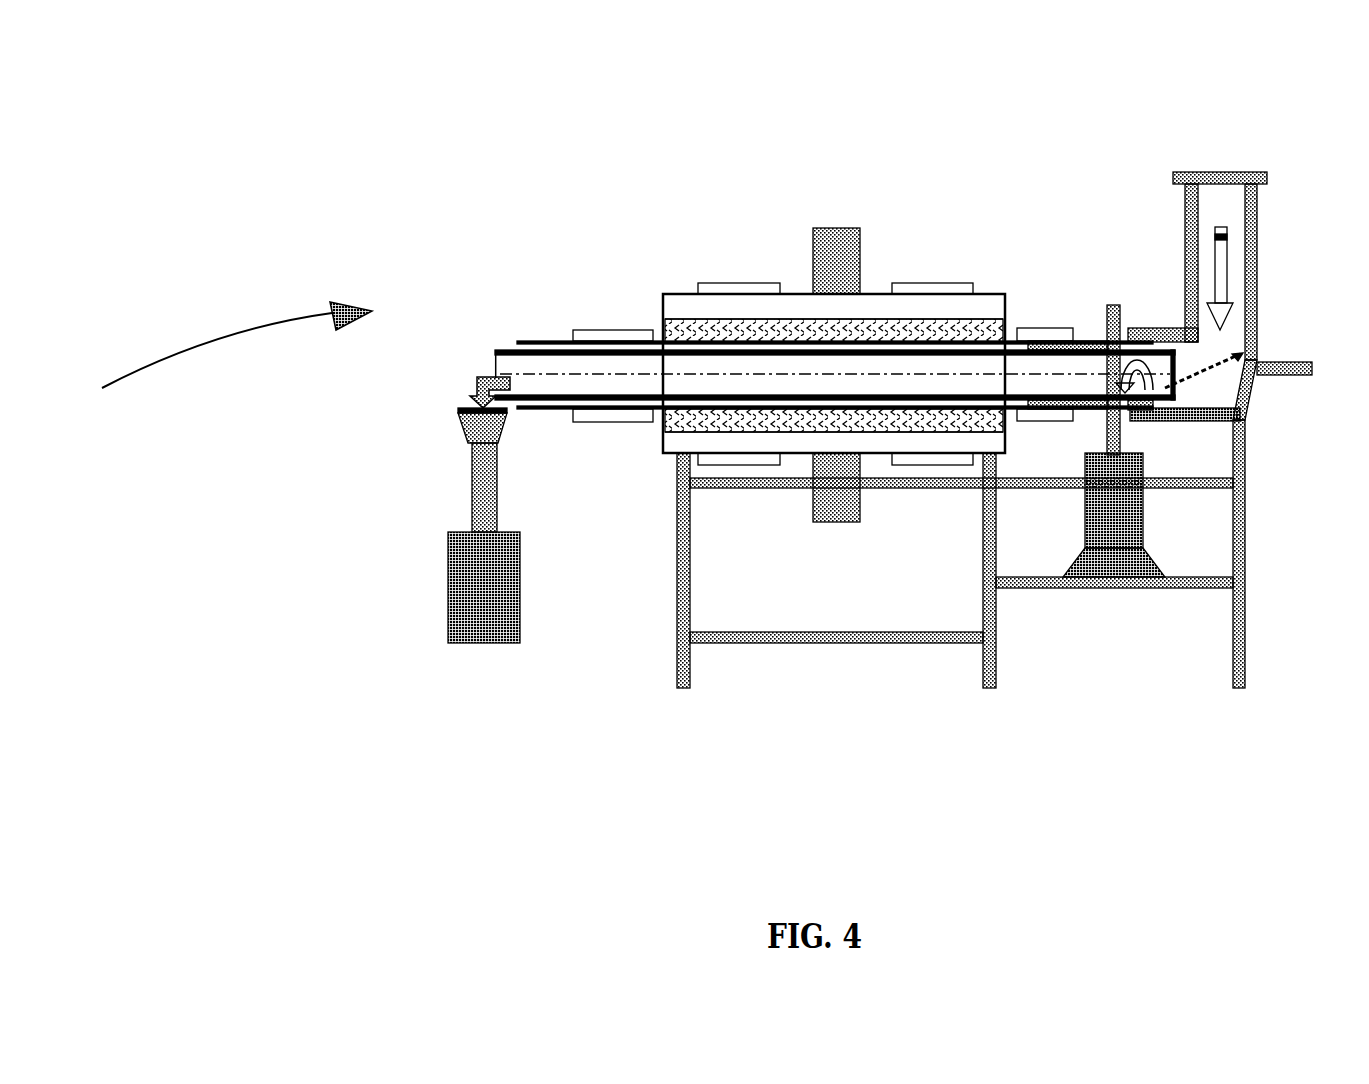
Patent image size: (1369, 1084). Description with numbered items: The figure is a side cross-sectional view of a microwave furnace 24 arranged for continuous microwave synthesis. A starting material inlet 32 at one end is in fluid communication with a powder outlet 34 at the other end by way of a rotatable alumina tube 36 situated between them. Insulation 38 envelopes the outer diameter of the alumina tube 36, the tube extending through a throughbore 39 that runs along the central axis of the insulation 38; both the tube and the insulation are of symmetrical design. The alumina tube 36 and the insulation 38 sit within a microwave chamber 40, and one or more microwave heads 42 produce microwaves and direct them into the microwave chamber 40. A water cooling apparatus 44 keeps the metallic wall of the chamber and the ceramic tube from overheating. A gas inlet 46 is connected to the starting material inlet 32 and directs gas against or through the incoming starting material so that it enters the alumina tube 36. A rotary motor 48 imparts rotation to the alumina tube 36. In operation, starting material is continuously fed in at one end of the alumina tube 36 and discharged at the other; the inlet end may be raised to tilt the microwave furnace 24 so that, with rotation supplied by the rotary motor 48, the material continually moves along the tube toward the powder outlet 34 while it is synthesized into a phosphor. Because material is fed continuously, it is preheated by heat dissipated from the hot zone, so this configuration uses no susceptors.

The microwave furnace 24 is at (207, 379).
The starting material inlet 32 is at (1222, 172).
The powder outlet 34 is at (463, 396).
The alumina tube 36 is at (633, 350).
The insulation 38 is at (672, 420).
The throughbore 39 is at (560, 340).
The microwave chamber 40 is at (990, 305).
The microwave heads 42 is at (850, 228).
The water cooling apparatus 44 is at (1045, 330).
The gas inlet 46 is at (1292, 375).
The rotary motor 48 is at (1140, 590).